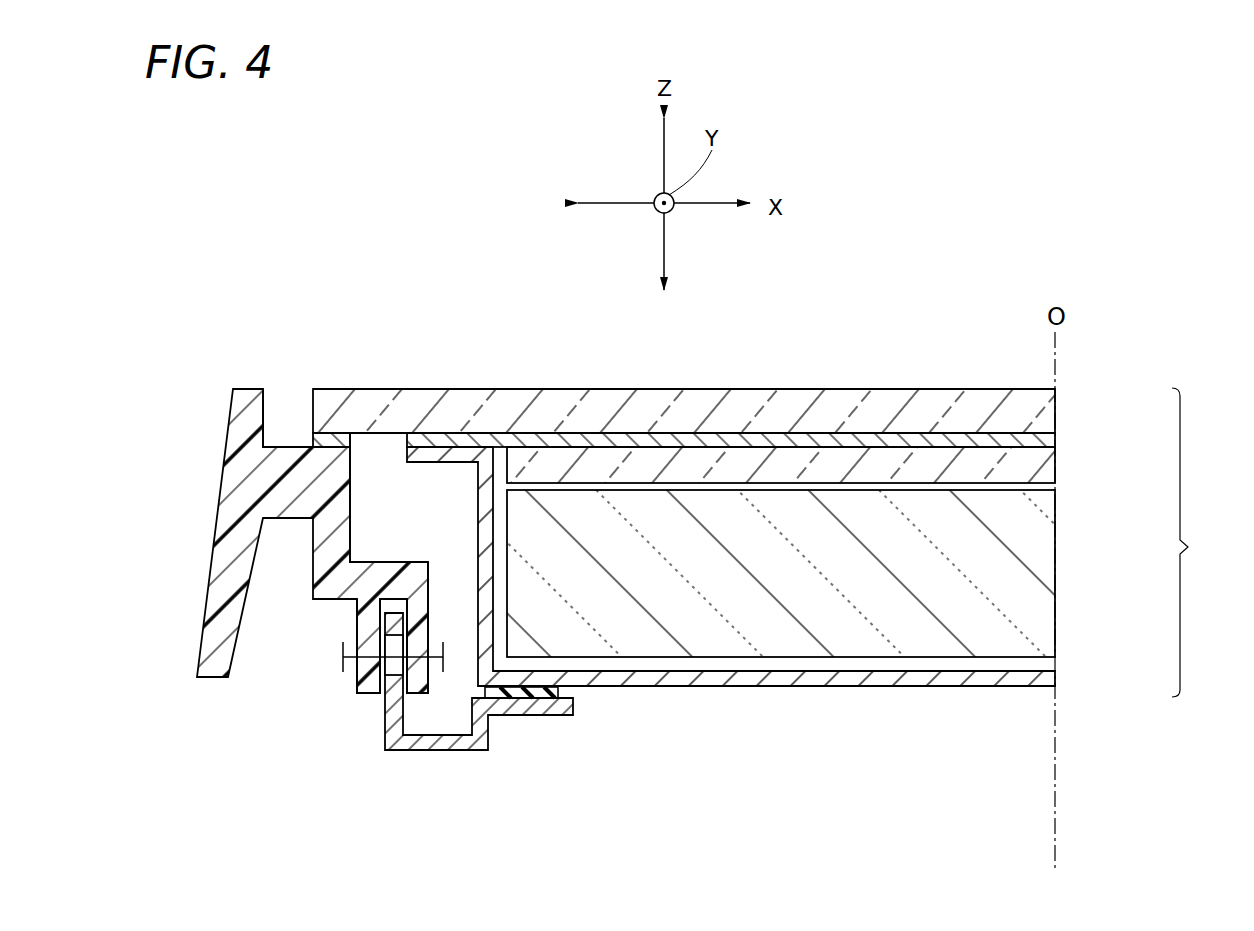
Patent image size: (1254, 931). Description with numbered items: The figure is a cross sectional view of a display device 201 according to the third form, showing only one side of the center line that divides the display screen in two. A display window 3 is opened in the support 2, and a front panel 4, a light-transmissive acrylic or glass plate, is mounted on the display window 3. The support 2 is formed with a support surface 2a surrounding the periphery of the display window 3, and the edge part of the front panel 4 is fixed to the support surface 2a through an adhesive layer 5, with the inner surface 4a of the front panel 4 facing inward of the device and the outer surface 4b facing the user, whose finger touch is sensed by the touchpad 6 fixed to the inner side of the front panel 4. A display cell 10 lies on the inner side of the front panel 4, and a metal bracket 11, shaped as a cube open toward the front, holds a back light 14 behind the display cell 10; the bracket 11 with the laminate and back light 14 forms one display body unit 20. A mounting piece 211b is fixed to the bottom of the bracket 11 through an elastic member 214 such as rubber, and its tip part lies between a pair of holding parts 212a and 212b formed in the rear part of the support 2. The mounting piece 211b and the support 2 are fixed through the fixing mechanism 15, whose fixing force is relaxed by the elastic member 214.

The support 2 is at (232, 482).
The support surface 2a is at (290, 447).
The display window 3 is at (373, 446).
The front panel 4 is at (885, 405).
The inner surface 4a is at (738, 445).
The outer surface 4b is at (604, 389).
The adhesive layer 5 is at (328, 432).
The touchpad 6 is at (1043, 442).
The display cell 10 is at (1040, 468).
The bracket 11 is at (785, 687).
The back light 14 is at (1042, 577).
The fixing mechanism 15 is at (343, 695).
The display body unit 20 is at (1196, 542).
The display device 201 is at (982, 278).
The mounting piece 211b is at (457, 752).
The holding part 212a is at (372, 628).
The holding part 212b is at (428, 645).
The elastic member 214 is at (558, 692).